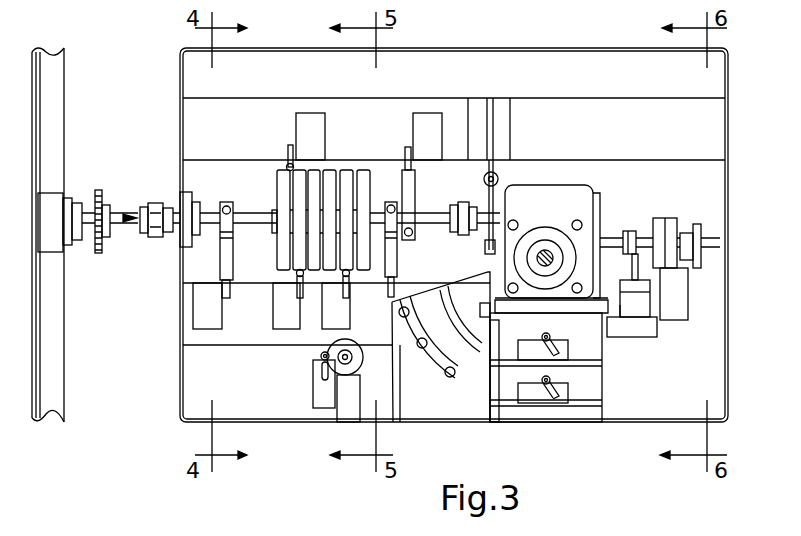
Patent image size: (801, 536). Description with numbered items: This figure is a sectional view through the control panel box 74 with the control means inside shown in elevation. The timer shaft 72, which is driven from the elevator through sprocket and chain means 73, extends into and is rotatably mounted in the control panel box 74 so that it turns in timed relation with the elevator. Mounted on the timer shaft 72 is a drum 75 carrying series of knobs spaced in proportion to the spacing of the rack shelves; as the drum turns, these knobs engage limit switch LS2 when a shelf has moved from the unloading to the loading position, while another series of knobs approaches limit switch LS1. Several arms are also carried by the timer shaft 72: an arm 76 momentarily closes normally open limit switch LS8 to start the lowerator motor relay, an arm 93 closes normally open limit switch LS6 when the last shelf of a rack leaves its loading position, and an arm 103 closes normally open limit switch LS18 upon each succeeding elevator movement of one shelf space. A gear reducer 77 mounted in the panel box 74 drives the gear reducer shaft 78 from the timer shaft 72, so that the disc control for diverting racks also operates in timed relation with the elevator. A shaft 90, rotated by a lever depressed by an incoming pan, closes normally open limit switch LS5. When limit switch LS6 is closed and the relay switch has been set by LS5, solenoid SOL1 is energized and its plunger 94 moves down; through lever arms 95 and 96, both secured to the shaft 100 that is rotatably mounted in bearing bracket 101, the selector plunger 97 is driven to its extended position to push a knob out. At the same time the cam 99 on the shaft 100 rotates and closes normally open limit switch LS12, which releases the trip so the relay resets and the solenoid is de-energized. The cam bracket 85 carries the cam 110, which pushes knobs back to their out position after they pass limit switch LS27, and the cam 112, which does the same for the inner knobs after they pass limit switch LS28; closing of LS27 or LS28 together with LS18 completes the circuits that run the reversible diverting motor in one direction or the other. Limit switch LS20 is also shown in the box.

The timer shaft 72 is at (198, 205).
The sprocket and chain means 73 is at (96, 190).
The control panel box 74 is at (462, 49).
The drum 75 is at (280, 168).
The arm 76 is at (403, 172).
The gear reducer 77 is at (580, 189).
The gear reducer shaft 78 is at (552, 252).
The cam bracket 85 is at (395, 385).
The shaft 90 is at (340, 375).
The arm 93 is at (396, 262).
The plunger 94 is at (640, 260).
The lever arm 95 is at (634, 230).
The lever arm 96 is at (486, 204).
The selector plunger 97 is at (496, 175).
The cam 99 is at (700, 242).
The shaft 100 is at (672, 222).
The bearing bracket 101 is at (663, 238).
The arm 103 is at (220, 250).
The cam 110 is at (482, 318).
The cam 112 is at (495, 390).
The limit switch LS1 is at (290, 330).
The limit switch LS2 is at (325, 330).
The limit switch LS5 is at (313, 400).
The limit switch LS6 is at (415, 355).
The limit switch LS8 is at (431, 113).
The limit switch LS12 is at (692, 302).
The limit switch LS18 is at (218, 330).
The limit switch LS20 is at (316, 113).
The limit switch LS27 is at (545, 400).
The limit switch LS28 is at (570, 360).
The solenoid SOL1 is at (642, 340).